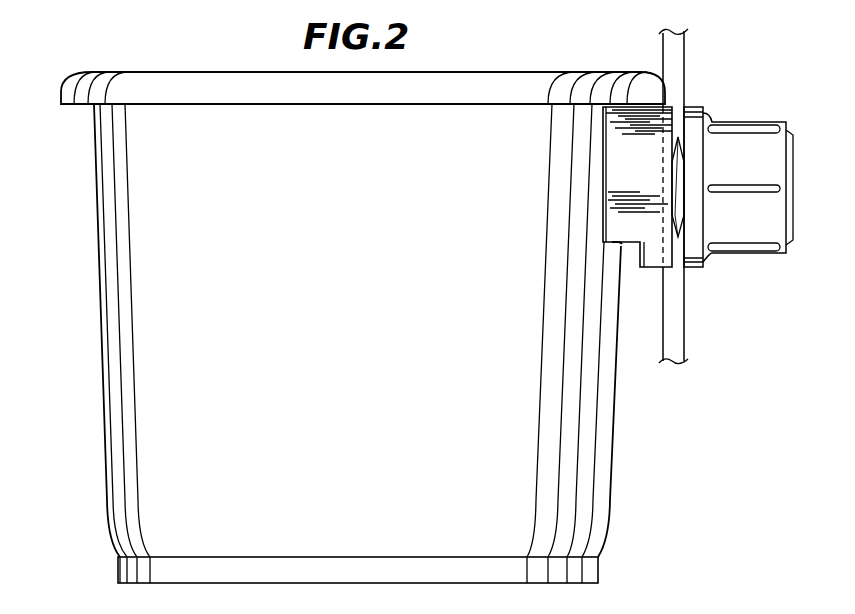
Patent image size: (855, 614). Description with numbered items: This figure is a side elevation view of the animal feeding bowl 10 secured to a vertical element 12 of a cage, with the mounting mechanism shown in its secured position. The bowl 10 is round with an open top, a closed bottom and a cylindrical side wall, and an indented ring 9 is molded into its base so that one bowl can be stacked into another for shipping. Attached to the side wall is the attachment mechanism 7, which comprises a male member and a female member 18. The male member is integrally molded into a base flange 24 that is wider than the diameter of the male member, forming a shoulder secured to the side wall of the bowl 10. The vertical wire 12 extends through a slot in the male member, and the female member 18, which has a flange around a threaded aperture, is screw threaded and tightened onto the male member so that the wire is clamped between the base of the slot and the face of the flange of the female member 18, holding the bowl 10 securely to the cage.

The animal feeding bowl 10 is at (342, 329).
The indented ring 9 is at (140, 568).
The vertical element 12 is at (686, 53).
The base flange 24 is at (633, 205).
The attachment mechanism 7 is at (757, 221).
The female member 18 is at (733, 265).